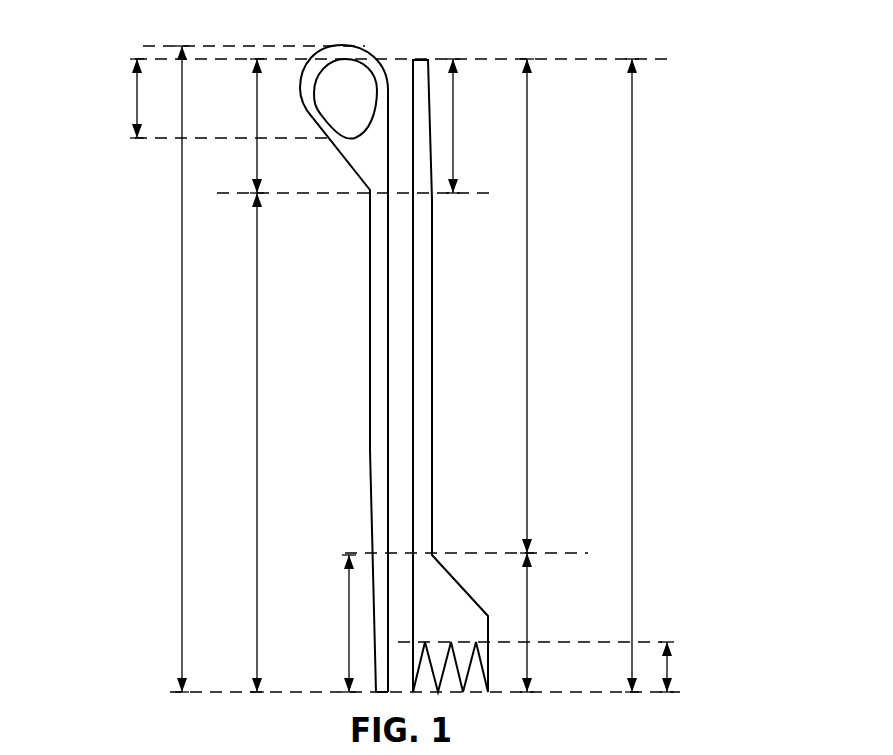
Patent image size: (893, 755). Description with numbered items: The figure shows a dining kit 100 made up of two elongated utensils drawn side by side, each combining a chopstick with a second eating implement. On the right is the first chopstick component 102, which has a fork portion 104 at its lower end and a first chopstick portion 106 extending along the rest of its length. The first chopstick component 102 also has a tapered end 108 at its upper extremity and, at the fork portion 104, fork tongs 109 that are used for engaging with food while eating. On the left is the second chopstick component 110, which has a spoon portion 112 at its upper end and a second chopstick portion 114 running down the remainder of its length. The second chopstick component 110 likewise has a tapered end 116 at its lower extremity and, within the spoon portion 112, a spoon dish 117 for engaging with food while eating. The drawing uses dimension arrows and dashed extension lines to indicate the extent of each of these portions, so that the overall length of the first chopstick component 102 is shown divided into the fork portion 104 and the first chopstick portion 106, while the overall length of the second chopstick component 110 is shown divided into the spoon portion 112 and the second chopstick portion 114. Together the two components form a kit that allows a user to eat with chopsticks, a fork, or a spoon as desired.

The dining kit 100 is at (695, 134).
The first chopstick component 102 is at (632, 375).
The fork portion 104 is at (527, 613).
The first chopstick portion 106 is at (527, 335).
The tapered end 108 is at (453, 132).
The fork tongs 109 is at (667, 660).
The second chopstick component 110 is at (182, 373).
The spoon portion 112 is at (257, 98).
The second chopstick portion 114 is at (257, 396).
The tapered end 116 is at (349, 632).
The spoon dish 117 is at (137, 98).